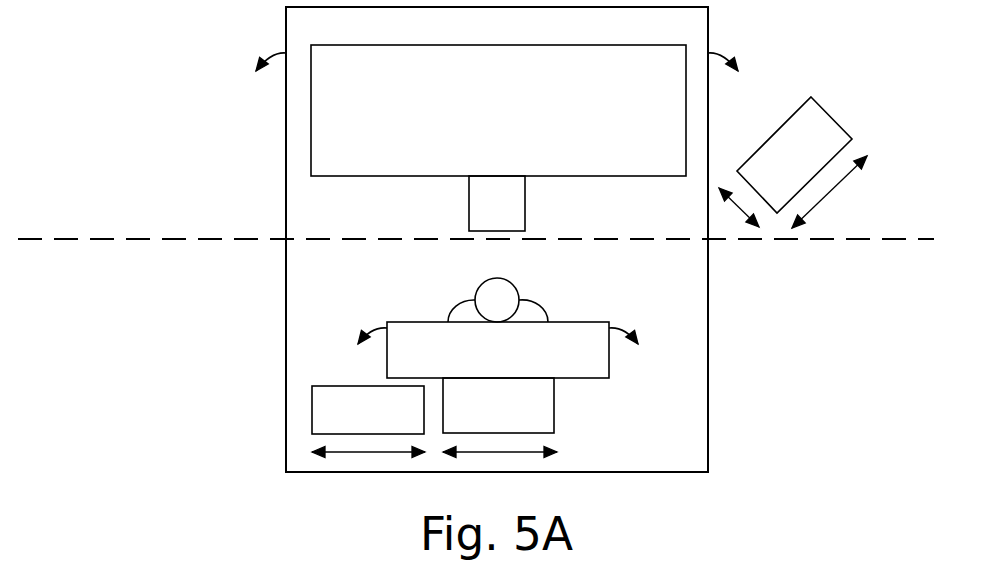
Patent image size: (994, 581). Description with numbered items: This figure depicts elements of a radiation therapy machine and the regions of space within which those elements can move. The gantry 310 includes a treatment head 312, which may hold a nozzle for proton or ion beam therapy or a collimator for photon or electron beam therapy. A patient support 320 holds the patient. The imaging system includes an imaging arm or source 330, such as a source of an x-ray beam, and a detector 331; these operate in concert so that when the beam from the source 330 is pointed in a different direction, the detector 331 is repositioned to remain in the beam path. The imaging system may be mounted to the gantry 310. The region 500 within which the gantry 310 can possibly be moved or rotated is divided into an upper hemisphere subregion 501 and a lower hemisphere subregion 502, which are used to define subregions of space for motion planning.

The region 500 is at (182, 35).
The upper hemisphere subregion 501 is at (68, 186).
The lower hemisphere subregion 502 is at (68, 315).
The gantry 310 is at (515, 35).
The treatment head 312 is at (515, 213).
The patient support 320 is at (515, 358).
The imaging arm or source 330 is at (817, 160).
The detector 331 is at (386, 418).